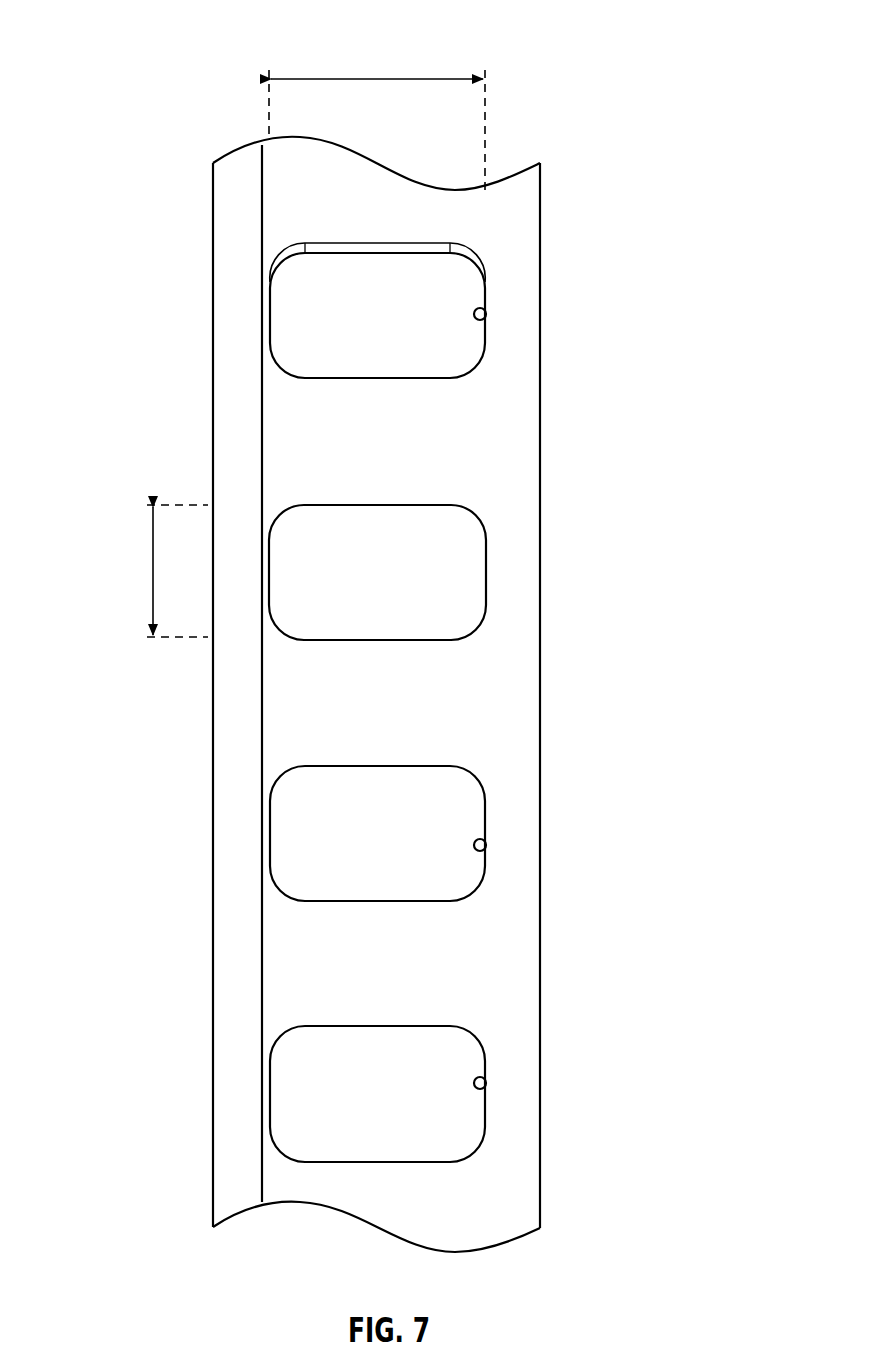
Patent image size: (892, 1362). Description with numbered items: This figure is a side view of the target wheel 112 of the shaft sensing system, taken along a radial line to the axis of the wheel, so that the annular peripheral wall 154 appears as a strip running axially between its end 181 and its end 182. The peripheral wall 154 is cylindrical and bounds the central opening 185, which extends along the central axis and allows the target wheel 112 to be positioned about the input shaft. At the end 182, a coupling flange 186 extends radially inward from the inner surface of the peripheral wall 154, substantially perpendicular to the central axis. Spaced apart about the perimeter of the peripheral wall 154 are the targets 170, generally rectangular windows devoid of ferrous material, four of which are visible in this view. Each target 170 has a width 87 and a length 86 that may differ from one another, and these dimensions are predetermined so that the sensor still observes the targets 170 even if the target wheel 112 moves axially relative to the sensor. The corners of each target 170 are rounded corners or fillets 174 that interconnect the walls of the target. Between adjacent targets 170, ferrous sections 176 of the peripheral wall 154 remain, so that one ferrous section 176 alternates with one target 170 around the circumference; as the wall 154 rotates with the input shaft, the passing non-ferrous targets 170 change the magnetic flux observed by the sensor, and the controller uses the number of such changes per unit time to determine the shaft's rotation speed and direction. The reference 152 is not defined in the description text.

The length 86 is at (378, 79).
The width 87 is at (153, 570).
The target wheel 112 is at (712, 477).
The channel member 152 is at (539, 775).
The annular peripheral wall 154 is at (550, 450).
The target 170 is at (485, 322).
The rounded corners or fillets 174 is at (278, 775).
The ferrous section 176 is at (437, 425).
The end 181 is at (541, 1202).
The end 182 is at (213, 1105).
The central opening 185 is at (236, 1049).
The coupling flange 186 is at (236, 270).